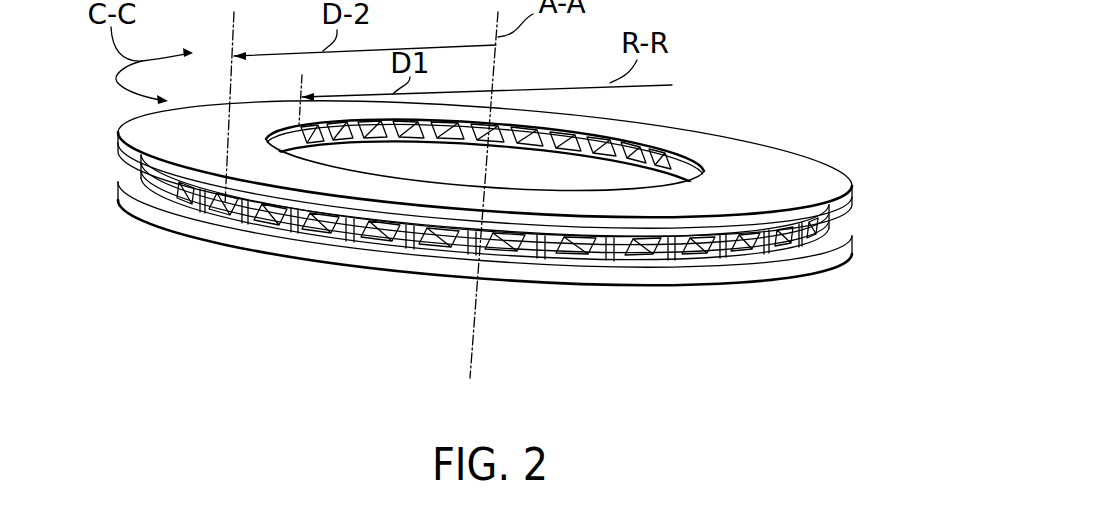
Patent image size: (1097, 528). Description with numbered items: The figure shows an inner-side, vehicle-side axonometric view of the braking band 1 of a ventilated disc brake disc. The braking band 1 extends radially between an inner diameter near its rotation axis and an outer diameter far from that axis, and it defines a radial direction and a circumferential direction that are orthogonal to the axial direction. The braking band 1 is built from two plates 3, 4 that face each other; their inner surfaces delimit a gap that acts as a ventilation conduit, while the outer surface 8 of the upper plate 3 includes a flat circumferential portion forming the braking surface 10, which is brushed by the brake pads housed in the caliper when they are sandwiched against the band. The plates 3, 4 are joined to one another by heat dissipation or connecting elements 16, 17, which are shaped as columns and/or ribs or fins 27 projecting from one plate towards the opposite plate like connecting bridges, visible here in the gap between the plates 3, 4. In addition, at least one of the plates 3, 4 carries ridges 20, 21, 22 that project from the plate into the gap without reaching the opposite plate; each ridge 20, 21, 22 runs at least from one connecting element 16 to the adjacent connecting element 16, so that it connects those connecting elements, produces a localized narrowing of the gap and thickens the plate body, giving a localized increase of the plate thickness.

The braking band 1 is at (778, 167).
The plate 3 is at (757, 170).
The plate 4 is at (753, 272).
The outer surface 8 is at (783, 187).
The braking surface 10 is at (720, 186).
The connecting element 16 is at (193, 222).
The connecting element 17 is at (133, 192).
The ridge 20 is at (203, 214).
The ridge 21 is at (290, 230).
The ridge 22 is at (523, 250).
The fin 27 is at (830, 256).